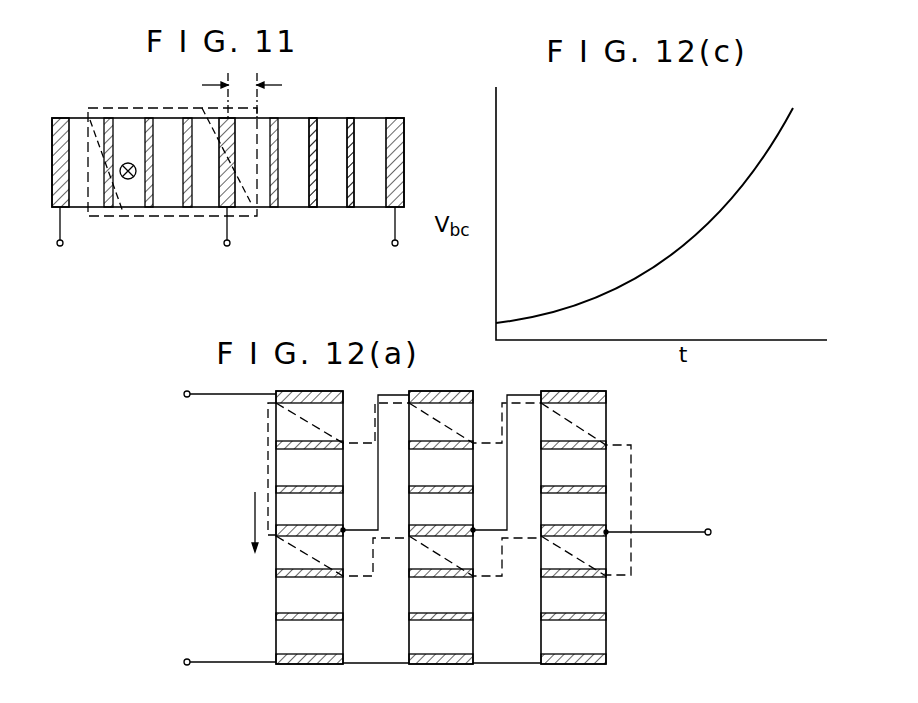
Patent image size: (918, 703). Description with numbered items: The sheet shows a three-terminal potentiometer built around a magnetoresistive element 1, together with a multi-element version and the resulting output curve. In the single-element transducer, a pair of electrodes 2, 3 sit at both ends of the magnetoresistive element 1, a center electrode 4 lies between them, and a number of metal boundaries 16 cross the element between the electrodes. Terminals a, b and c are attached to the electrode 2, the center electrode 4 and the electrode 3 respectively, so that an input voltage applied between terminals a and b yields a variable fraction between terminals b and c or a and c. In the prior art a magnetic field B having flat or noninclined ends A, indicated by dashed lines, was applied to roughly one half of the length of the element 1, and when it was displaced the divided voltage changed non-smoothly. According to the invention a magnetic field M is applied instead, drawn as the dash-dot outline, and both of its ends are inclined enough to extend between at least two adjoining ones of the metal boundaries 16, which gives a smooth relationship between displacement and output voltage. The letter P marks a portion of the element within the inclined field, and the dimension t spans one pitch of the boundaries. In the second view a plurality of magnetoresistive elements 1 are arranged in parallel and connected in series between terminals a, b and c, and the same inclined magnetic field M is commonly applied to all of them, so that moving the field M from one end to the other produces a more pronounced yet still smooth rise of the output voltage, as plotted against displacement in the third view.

In FIG. 11, the magnetoresistive element 1 is at (300, 197).
In FIG. 12A, the magnetoresistive element 1 is at (278, 592).
In FIG. 11, the end electrode 2 is at (52, 175).
In FIG. 11, the end electrode 3 is at (402, 200).
In FIG. 11, the center electrode 4 is at (221, 214).
In FIG. 11, the metal boundaries 16 is at (351, 138).
In FIG. 11, the magnetic field M is at (110, 109).
In FIG. 12A, the magnetic field M is at (627, 494).
In FIG. 11, the electrode portion P is at (202, 108).
In FIG. 11, the noninclined ends A is at (264, 125).
In FIG. 11, the magnetic field B is at (128, 158).